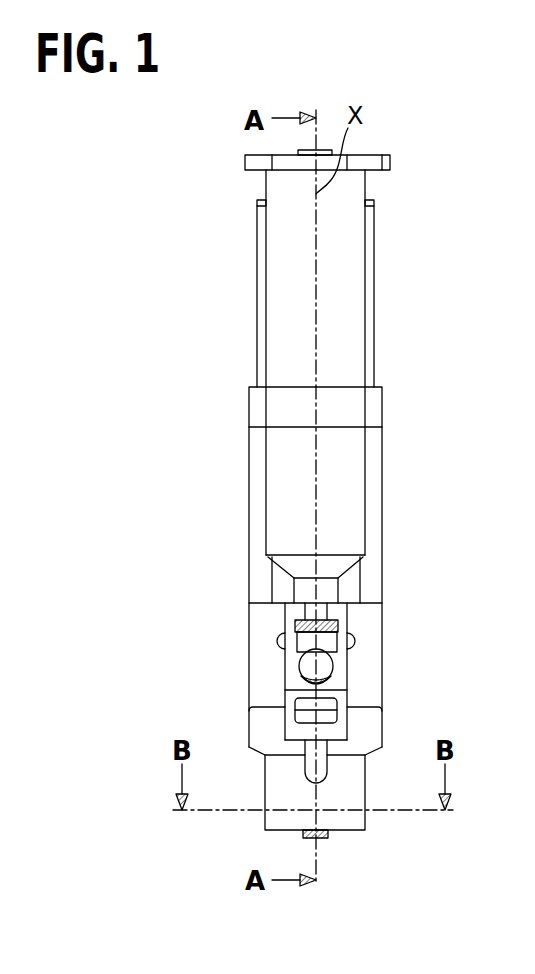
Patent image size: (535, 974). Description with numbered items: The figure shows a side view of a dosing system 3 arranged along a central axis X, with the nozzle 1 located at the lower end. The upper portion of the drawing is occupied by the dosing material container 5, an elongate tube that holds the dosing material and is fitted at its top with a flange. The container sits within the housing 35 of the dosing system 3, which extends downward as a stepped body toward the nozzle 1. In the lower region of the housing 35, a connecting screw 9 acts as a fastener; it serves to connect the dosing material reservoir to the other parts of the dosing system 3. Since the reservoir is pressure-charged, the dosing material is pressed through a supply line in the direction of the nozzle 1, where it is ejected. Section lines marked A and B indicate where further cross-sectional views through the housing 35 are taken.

The nozzle 1 is at (360, 851).
The dosing system 3 is at (388, 126).
The dosing material container 5 is at (347, 278).
The connecting screw 9 is at (298, 661).
The housing 35 is at (390, 342).